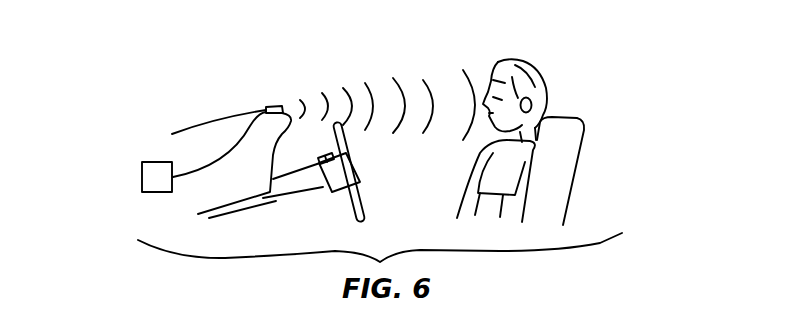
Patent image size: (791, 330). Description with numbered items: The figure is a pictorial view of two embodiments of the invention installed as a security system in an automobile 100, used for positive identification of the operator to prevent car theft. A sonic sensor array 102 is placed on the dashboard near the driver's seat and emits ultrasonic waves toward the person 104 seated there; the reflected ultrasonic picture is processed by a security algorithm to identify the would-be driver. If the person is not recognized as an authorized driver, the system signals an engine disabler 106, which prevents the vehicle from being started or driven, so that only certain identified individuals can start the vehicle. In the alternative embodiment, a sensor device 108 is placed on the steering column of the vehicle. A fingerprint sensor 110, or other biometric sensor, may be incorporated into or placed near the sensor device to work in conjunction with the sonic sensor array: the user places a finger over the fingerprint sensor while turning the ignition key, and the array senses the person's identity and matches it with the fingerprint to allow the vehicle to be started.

The automobile 100 is at (152, 109).
The sonic sensor array 102 is at (265, 108).
The person 104 is at (540, 72).
The engine disabler 106 is at (142, 174).
The sensor device 108 is at (348, 142).
The fingerprint sensor 110 is at (312, 192).